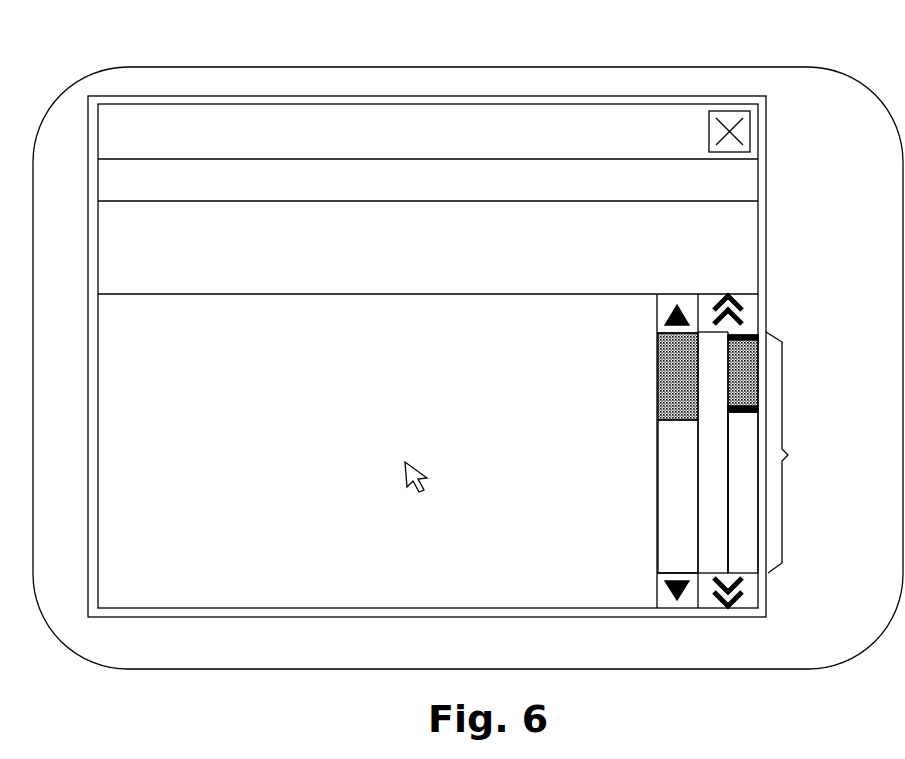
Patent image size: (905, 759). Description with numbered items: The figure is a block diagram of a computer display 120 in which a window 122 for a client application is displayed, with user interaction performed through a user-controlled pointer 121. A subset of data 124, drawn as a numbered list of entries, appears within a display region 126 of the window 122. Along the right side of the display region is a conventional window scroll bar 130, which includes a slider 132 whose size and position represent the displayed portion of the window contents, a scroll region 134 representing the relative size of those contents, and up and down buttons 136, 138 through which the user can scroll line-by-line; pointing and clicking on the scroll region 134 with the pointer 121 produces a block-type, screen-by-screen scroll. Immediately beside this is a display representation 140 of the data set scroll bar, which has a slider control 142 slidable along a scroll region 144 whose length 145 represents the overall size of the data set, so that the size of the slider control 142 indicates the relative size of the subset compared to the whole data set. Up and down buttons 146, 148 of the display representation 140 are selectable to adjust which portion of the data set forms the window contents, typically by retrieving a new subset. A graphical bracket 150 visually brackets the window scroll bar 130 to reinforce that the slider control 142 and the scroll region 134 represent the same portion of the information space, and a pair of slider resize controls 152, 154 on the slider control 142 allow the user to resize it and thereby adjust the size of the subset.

The computer display 120 is at (93, 80).
The window 122 is at (348, 96).
The subset of data 124 is at (338, 447).
The display region 126 is at (385, 578).
The user-controlled pointer 121 is at (426, 472).
The window scroll bar 130 is at (660, 458).
The slider 132 is at (665, 394).
The scroll region 134 is at (667, 522).
The up button 136 is at (660, 298).
The down button 138 is at (660, 595).
The display representation 140 is at (741, 546).
The slider control 142 is at (745, 372).
The scroll region 144 is at (745, 440).
The length 145 is at (788, 455).
The up button 146 is at (752, 298).
The down button 148 is at (750, 597).
The graphical bracket 150 is at (728, 512).
The slider resize control 152 is at (758, 333).
The slider resize control 154 is at (756, 408).